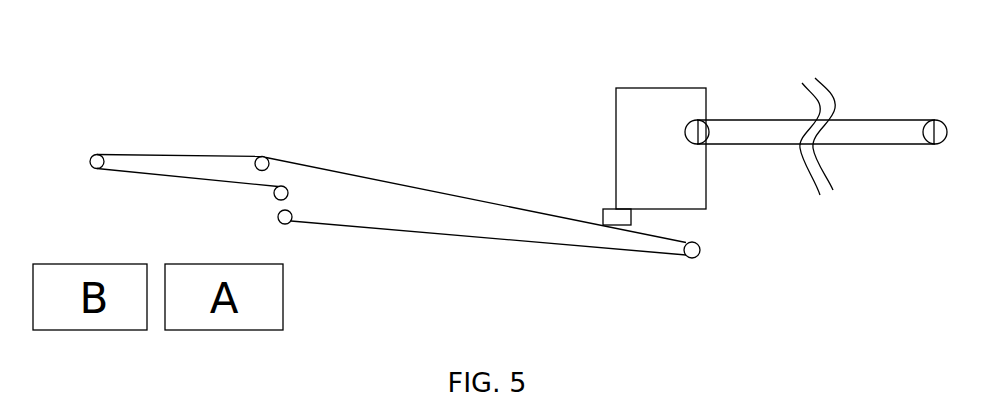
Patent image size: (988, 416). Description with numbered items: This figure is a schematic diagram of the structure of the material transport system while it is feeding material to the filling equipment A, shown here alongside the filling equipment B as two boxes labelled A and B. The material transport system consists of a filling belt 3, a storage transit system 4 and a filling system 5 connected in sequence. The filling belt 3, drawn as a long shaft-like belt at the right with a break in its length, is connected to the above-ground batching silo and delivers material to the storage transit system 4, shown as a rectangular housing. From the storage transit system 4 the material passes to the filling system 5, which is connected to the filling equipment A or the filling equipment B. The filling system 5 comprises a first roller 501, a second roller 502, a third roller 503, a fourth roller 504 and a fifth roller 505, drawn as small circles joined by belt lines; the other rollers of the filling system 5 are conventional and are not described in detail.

The filling belt 3 is at (863, 125).
The storage transit system 4 is at (660, 100).
The filling system 5 is at (507, 95).
The first roller 501 is at (260, 156).
The second roller 502 is at (285, 217).
The third roller 503 is at (697, 257).
The fourth roller 504 is at (96, 155).
The fifth roller 505 is at (287, 186).